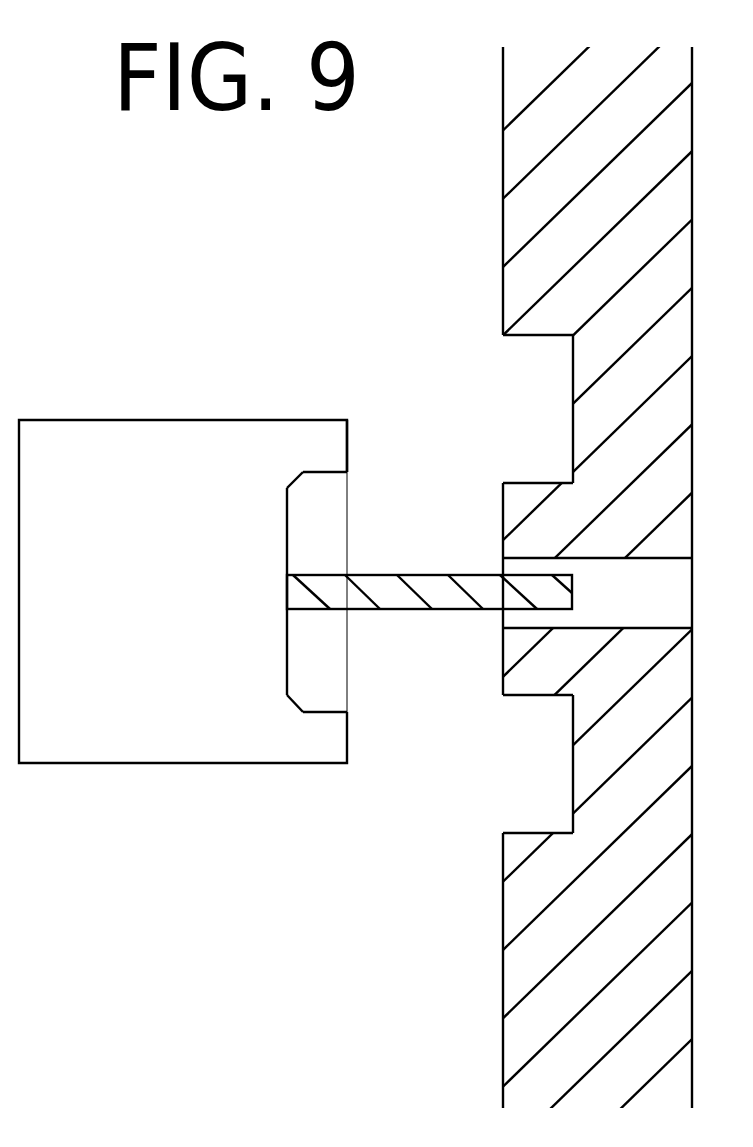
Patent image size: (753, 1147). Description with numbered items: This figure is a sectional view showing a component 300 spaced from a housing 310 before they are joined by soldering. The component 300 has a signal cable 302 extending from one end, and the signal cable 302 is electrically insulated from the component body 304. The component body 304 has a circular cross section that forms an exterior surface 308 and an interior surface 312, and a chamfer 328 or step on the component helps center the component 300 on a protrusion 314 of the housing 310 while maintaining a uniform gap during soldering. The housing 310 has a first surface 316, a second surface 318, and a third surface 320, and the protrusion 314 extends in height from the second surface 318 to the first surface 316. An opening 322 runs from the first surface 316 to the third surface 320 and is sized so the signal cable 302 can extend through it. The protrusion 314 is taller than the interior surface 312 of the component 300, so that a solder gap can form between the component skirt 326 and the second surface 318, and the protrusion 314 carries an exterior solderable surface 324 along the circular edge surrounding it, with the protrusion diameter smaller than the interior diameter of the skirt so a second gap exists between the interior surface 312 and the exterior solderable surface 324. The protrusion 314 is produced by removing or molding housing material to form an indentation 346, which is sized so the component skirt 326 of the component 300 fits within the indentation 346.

The component 300 is at (192, 387).
The signal cable 302 is at (429, 616).
The component body 304 is at (183, 648).
The exterior surface 308 is at (334, 674).
The housing 310 is at (567, 573).
The interior surface 312 is at (365, 689).
The protrusion 314 is at (445, 688).
The first surface 316 is at (515, 735).
The second surface 318 is at (515, 760).
The third surface 320 is at (552, 577).
The opening 322 is at (552, 527).
The exterior solderable surface 324 is at (515, 439).
The component skirt 326 is at (405, 405).
The chamfer 328 is at (369, 495).
The indentation 346 is at (493, 831).